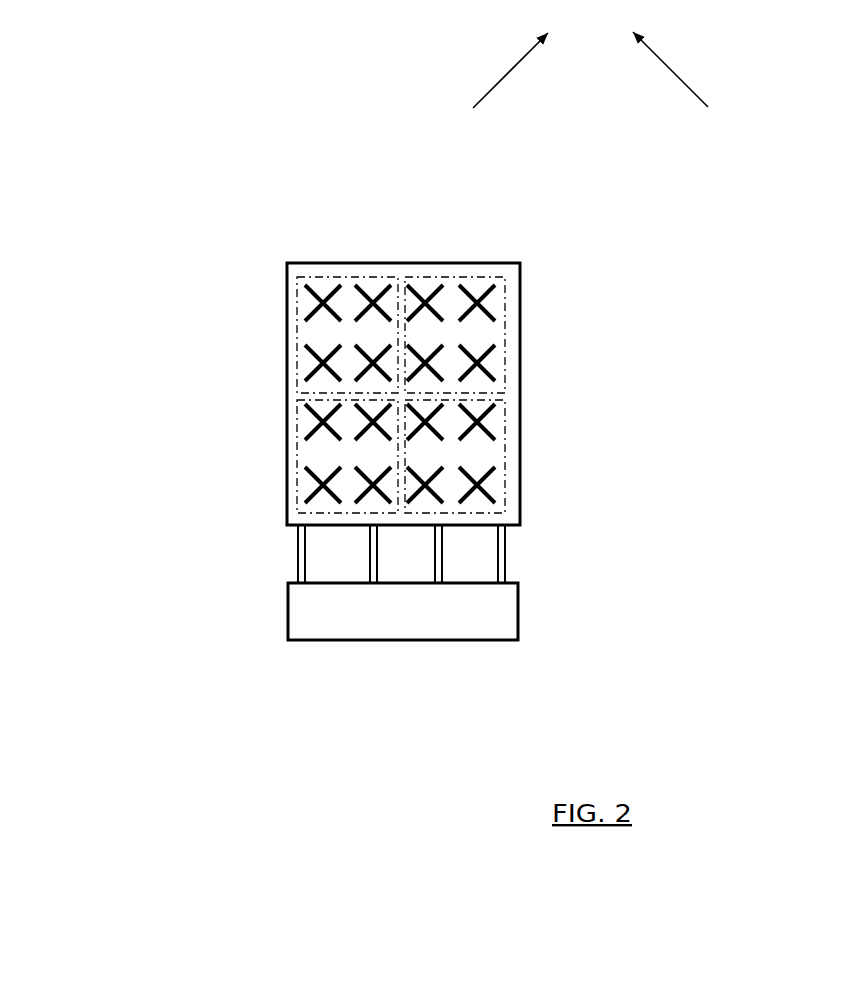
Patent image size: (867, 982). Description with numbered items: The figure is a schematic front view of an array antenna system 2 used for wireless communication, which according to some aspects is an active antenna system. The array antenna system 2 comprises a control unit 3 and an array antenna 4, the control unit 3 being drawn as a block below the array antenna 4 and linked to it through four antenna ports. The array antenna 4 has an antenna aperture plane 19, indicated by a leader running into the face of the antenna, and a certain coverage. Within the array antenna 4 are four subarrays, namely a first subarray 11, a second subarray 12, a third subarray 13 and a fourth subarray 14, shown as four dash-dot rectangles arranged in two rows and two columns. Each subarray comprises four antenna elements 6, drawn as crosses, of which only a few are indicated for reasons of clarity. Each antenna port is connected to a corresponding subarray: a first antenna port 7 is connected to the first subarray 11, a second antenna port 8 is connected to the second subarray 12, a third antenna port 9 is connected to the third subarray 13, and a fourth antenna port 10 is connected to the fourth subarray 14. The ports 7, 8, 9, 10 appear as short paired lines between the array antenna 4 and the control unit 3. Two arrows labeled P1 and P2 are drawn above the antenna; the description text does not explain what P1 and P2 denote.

The array antenna system 2 is at (302, 112).
The control unit 3 is at (403, 611).
The array antenna 4 is at (332, 262).
The antenna elements 6 is at (427, 477).
The first antenna port 7 is at (305, 552).
The second antenna port 8 is at (377, 563).
The third antenna port 9 is at (437, 565).
The fourth antenna port 10 is at (505, 542).
The first subarray 11 is at (298, 320).
The second subarray 12 is at (503, 353).
The third subarray 13 is at (300, 423).
The fourth subarray 14 is at (503, 447).
The antenna aperture plane 19 is at (338, 453).
The first direction P1 is at (520, 70).
The second direction P2 is at (680, 69).